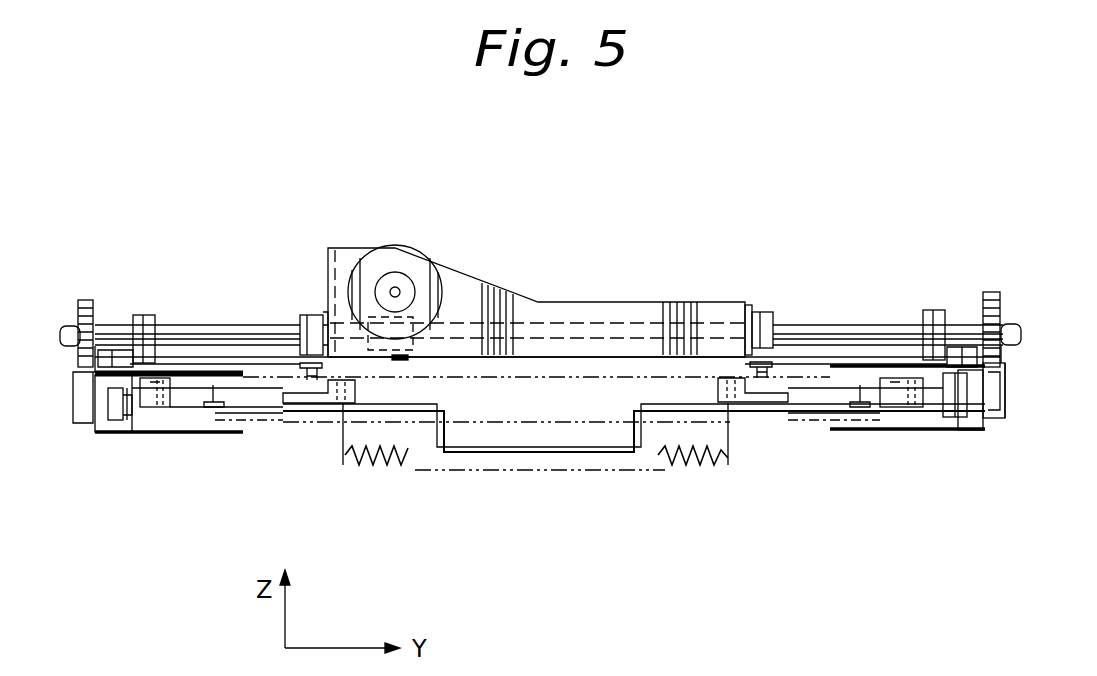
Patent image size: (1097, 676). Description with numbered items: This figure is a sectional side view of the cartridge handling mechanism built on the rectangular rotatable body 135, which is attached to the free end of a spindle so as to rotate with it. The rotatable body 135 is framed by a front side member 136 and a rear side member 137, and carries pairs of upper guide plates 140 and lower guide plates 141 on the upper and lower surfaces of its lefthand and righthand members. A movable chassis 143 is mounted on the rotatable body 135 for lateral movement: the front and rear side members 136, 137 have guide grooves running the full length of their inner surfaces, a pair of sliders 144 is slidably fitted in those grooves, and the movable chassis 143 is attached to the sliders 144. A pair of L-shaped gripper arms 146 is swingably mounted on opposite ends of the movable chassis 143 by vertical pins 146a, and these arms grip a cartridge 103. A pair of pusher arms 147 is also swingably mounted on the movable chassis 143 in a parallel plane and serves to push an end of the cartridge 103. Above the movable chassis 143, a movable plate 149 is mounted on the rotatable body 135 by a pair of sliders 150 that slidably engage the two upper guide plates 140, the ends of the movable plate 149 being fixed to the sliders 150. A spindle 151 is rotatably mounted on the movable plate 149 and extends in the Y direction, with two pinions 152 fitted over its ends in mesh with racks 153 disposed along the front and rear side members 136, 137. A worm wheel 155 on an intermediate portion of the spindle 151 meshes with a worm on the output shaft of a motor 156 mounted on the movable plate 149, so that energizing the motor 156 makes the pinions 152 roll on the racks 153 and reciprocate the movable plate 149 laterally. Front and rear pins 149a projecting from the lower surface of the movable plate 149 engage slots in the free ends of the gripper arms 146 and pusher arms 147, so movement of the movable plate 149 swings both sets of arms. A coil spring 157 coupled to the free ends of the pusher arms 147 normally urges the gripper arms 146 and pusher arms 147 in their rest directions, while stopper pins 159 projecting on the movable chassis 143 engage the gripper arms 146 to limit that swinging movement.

The cartridge 103 is at (87, 418).
The rectangular rotatable body 135 is at (1008, 383).
The front side member 136 is at (970, 416).
The rear side member 137 is at (113, 432).
The upper guide plate 140 is at (105, 368).
The lower guide plate 141 is at (186, 402).
The movable chassis 143 is at (418, 413).
The slider 144 is at (128, 420).
The L-shaped gripper arm 146 is at (255, 392).
The pin 146a is at (165, 407).
The pusher arm 147 is at (295, 405).
The movable plate 149 is at (788, 358).
The pin 149a is at (312, 405).
The slider 150 is at (140, 318).
The spindle 151 is at (838, 327).
The pinion 152 is at (85, 300).
The rack 153 is at (993, 415).
The worm wheel 155 is at (443, 283).
The motor 156 is at (417, 270).
The coil spring 157 is at (673, 468).
The stopper pin 159 is at (214, 407).